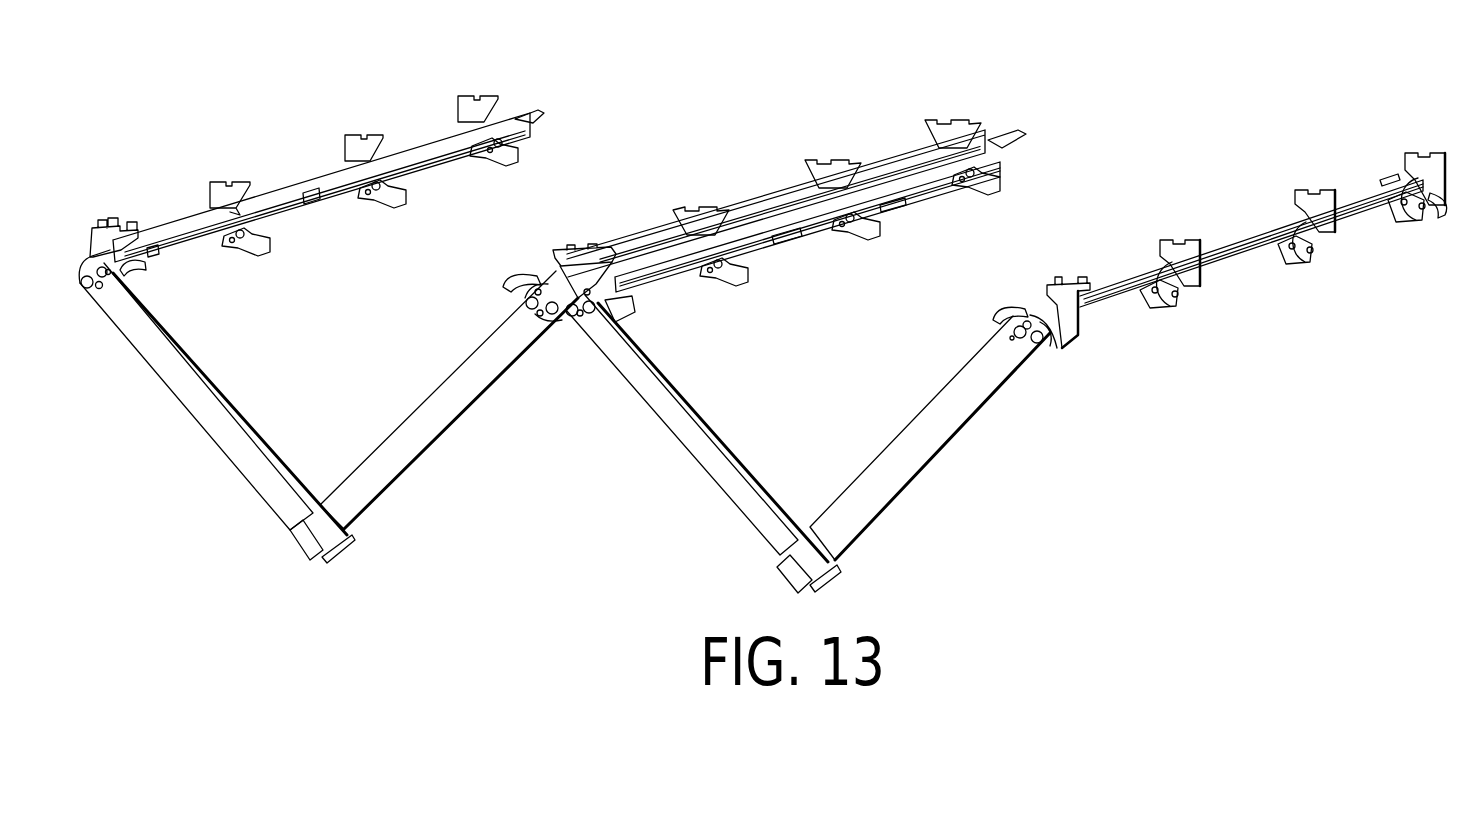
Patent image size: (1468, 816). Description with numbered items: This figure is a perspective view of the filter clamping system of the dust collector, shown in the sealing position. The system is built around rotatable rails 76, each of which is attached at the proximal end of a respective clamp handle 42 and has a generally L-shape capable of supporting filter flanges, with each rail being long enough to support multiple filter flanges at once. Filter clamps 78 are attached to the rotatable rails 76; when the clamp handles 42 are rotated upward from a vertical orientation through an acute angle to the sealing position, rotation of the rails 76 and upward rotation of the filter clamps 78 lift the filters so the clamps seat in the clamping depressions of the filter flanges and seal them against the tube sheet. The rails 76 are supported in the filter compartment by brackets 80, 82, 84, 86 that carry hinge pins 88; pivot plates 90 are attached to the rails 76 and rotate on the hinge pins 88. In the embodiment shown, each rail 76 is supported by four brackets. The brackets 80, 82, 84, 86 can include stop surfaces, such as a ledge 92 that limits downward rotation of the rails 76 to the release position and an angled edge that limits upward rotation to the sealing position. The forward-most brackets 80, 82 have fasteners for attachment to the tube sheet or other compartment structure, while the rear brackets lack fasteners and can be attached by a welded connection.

The clamp handle 42 is at (182, 410).
The rotatable rail 76 is at (505, 114).
The filter clamp 78 is at (320, 202).
The bracket 80 is at (112, 216).
The bracket 82 is at (222, 180).
The bracket 84 is at (584, 244).
The bracket 86 is at (686, 206).
The hinge pin 88 is at (492, 152).
The pivot plate 90 is at (470, 166).
The ledge 92 is at (260, 232).